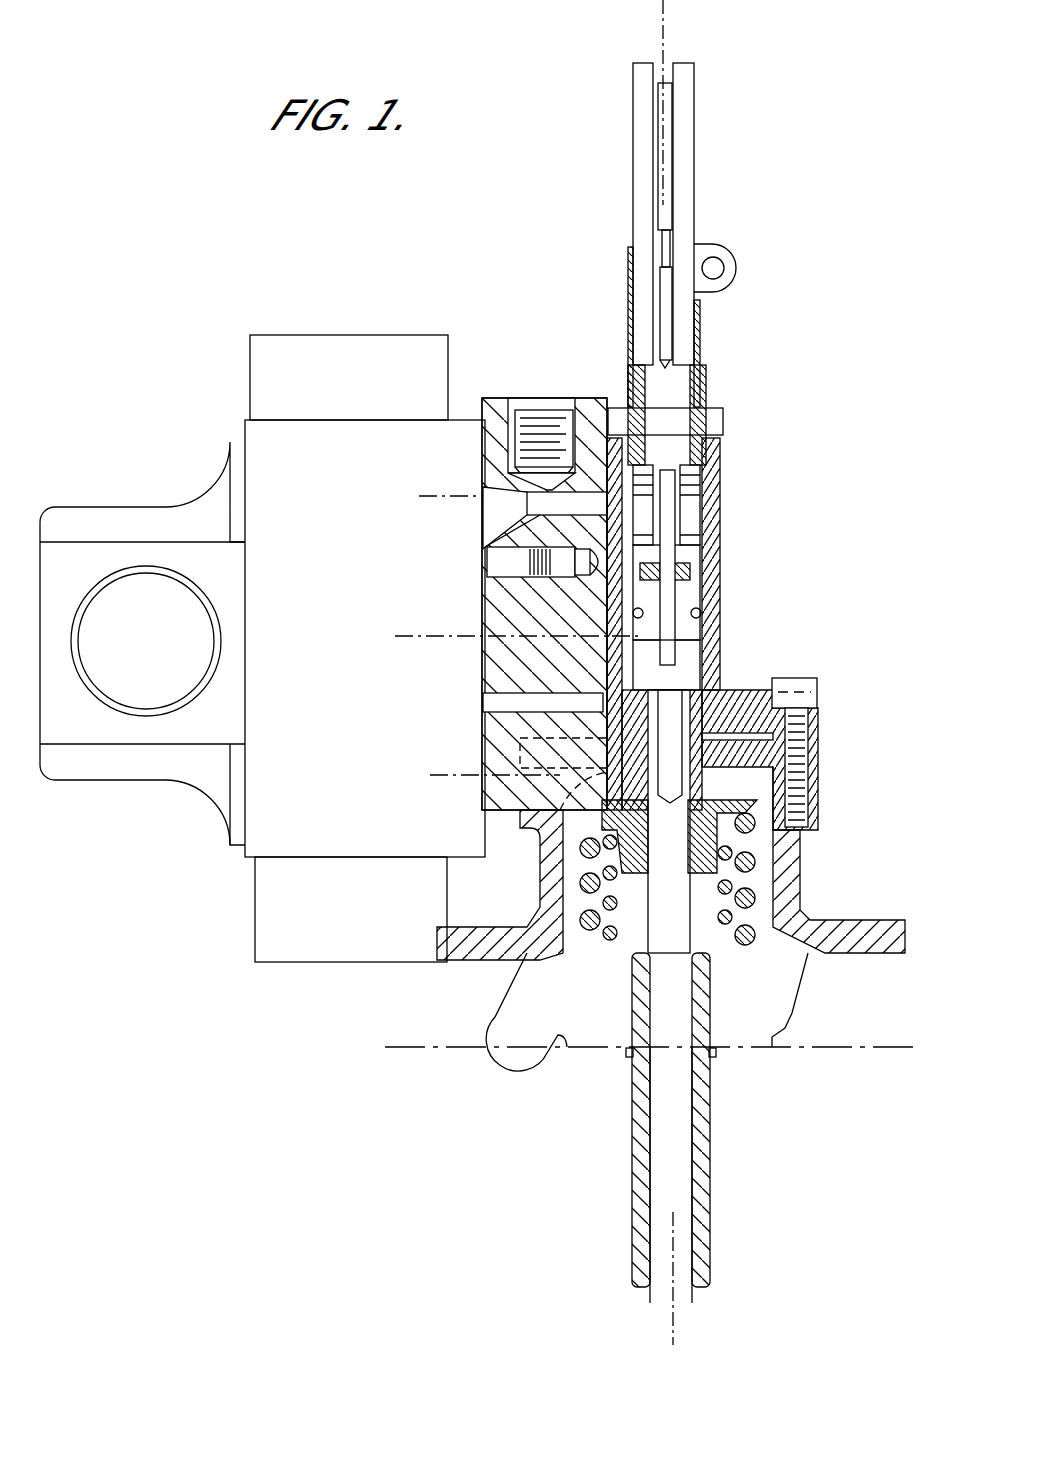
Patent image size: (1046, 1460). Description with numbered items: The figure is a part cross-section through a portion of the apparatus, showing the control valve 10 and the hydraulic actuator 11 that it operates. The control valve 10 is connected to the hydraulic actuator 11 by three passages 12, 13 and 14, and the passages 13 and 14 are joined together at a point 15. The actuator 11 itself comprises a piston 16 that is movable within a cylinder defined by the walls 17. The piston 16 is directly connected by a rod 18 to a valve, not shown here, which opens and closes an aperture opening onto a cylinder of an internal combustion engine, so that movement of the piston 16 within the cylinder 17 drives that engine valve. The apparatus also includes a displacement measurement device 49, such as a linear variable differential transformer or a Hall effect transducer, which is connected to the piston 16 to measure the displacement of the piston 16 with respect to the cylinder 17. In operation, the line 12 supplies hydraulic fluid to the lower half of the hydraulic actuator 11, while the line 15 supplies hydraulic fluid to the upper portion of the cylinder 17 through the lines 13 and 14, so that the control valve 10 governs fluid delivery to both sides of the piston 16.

The control valve 10 is at (270, 453).
The hydraulic actuator 11 is at (671, 718).
The passage 12 is at (509, 604).
The passage 13 is at (495, 566).
The passage 14 is at (525, 510).
The junction point 15 is at (500, 543).
The piston 16 is at (690, 634).
The cylinder walls 17 is at (623, 667).
The rod 18 is at (682, 1248).
The displacement measurement device 49 is at (667, 203).